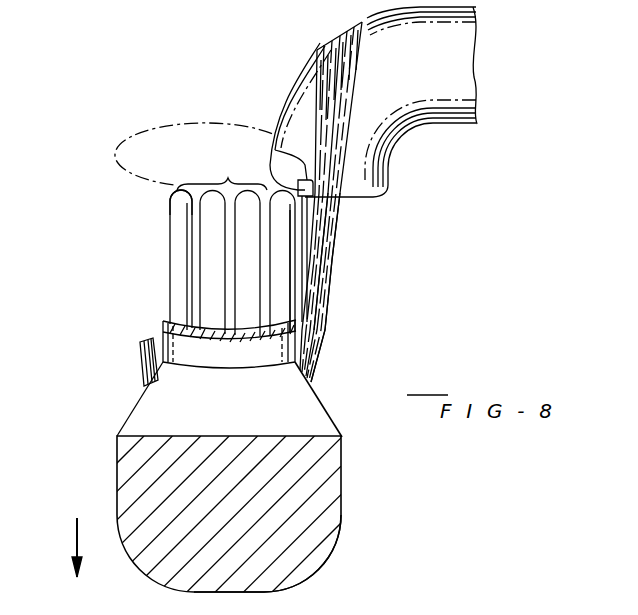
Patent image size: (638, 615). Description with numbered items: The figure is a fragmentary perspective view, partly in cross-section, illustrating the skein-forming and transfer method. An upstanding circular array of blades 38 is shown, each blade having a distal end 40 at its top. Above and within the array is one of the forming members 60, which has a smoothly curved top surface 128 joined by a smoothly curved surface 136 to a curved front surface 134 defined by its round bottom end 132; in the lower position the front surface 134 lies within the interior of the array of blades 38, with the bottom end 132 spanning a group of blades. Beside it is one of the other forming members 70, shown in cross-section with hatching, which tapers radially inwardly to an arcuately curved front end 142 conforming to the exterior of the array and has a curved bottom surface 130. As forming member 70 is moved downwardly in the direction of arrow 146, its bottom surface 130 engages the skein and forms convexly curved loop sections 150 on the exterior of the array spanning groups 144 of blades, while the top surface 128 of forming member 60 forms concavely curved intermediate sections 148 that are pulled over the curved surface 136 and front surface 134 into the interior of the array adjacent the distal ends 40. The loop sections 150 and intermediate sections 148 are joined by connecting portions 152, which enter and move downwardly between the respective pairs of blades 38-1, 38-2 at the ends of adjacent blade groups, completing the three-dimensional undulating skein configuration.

The blades 38 is at (180, 255).
The blade 38-1 is at (313, 232).
The blade 38-2 is at (281, 262).
The distal ends 40 is at (181, 198).
The forming member 60 is at (380, 117).
The forming member 70 is at (341, 471).
The top surface 128 is at (480, 8).
The curved bottom surface 130 is at (306, 580).
The round bottom end 132 is at (370, 197).
The curved front surface 134 is at (272, 150).
The smoothly curved surface 136 is at (303, 92).
The front end 142 is at (228, 358).
The group of blades 144 is at (222, 175).
The arrow 146 is at (72, 541).
The concavely curved intermediate sections 148 is at (337, 42).
The convexly curved loop sections 150 is at (140, 372).
The connecting portions 152 is at (324, 318).